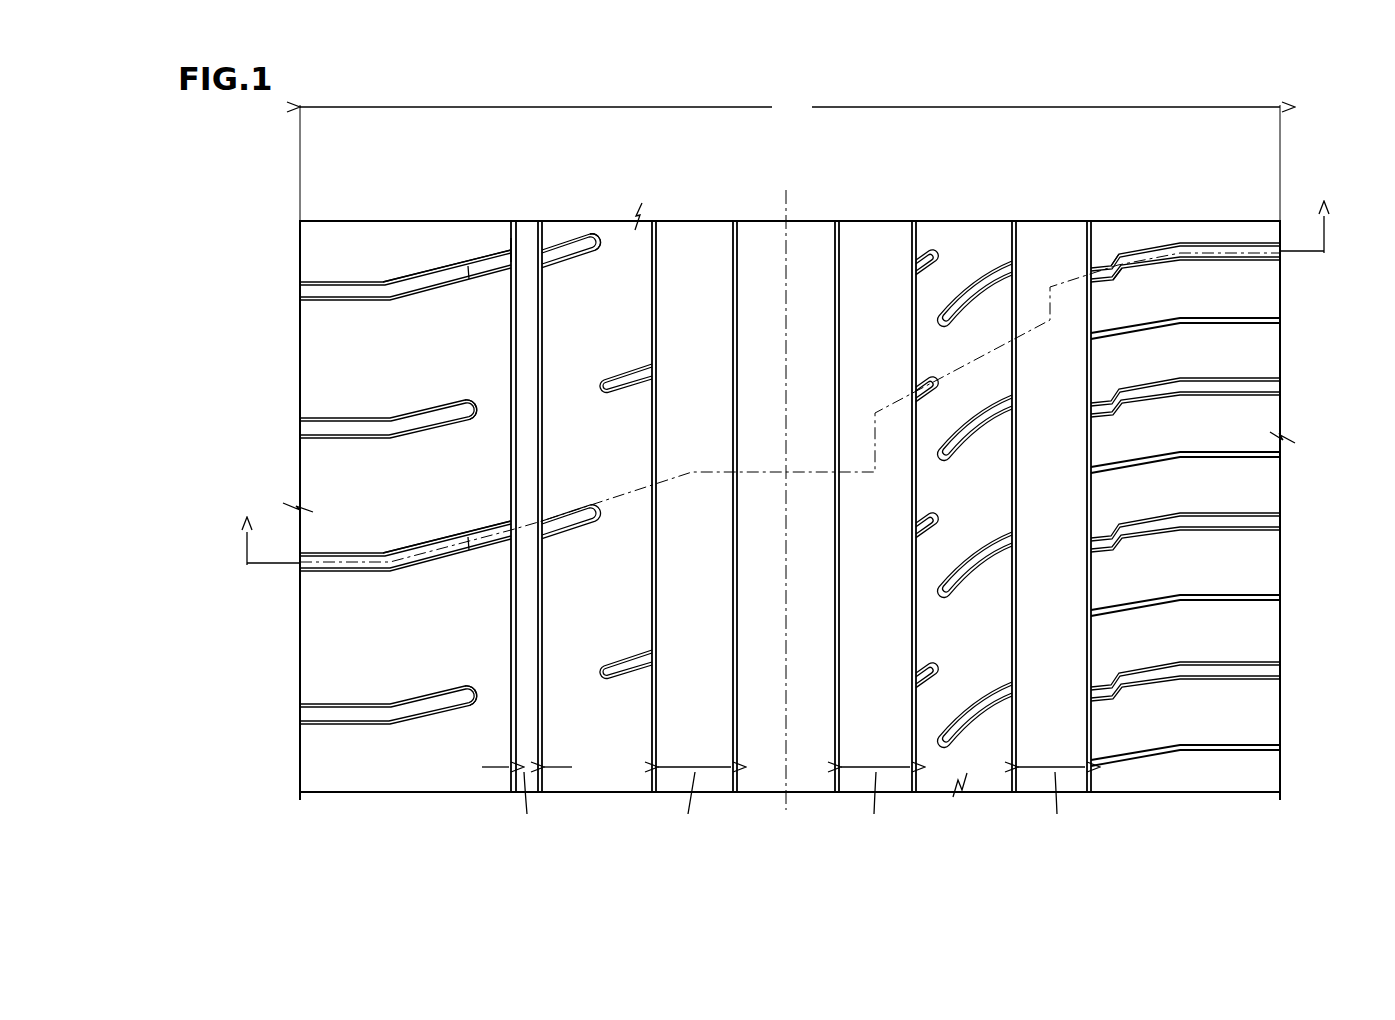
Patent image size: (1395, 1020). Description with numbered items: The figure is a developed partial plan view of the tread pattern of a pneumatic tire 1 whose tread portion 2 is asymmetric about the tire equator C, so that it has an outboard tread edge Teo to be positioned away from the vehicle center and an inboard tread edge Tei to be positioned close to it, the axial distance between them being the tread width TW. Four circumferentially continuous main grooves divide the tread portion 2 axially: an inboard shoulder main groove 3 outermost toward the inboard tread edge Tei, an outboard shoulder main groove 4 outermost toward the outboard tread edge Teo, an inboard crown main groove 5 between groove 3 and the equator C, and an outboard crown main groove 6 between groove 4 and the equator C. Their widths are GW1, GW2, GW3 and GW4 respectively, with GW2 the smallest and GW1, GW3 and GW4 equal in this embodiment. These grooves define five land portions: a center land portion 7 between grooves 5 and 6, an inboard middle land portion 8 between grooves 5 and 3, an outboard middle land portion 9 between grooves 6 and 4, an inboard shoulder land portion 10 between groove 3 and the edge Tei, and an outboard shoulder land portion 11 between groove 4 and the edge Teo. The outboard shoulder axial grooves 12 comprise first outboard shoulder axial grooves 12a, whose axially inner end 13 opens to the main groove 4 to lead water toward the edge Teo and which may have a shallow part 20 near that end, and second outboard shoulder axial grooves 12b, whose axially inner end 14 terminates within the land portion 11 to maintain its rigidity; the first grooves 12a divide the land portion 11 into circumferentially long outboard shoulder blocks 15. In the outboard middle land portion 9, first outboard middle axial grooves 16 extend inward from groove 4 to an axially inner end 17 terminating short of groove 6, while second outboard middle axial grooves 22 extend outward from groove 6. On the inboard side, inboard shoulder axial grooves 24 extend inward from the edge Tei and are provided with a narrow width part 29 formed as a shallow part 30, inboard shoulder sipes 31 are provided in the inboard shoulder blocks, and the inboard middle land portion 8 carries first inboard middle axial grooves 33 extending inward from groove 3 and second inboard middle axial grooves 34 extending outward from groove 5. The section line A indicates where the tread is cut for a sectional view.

The pneumatic tire 1 is at (1300, 183).
The tread portion 2 is at (980, 170).
The inboard shoulder main groove 3 is at (1055, 245).
The outboard shoulder main groove 4 is at (523, 245).
The inboard crown main groove 5 is at (868, 245).
The outboard crown main groove 6 is at (695, 243).
The center land portion 7 is at (803, 768).
The inboard middle land portion 8 is at (987, 760).
The outboard middle land portion 9 is at (600, 768).
The inboard shoulder land portion 10 is at (1178, 768).
The outboard shoulder land portion 11 is at (394, 768).
The outboard shoulder axial grooves 12 is at (333, 519).
The first outboard shoulder axial groove 12a is at (352, 293).
The second outboard shoulder axial groove 12b is at (357, 425).
The axially inner end 13 is at (515, 247).
The axially inner end 14 is at (478, 420).
The outboard shoulder block 15 is at (388, 512).
The first outboard middle axial groove 16 is at (565, 240).
The axially inner end 17 is at (600, 238).
The shallow part 20 is at (482, 272).
The second outboard middle axial groove 22 is at (628, 380).
The inboard shoulder axial groove 24 is at (1240, 383).
The narrow width part 29 is at (1185, 212).
The shallow part 30 is at (1100, 265).
The inboard shoulder sipe 31 is at (1228, 318).
The first inboard middle axial groove 33 is at (985, 275).
The second inboard middle axial groove 34 is at (937, 252).
The tread width TW is at (790, 156).
The tire equator C is at (786, 485).
The outboard tread edge Teo is at (298, 313).
The inboard tread edge Tei is at (1282, 332).
The width of inboard shoulder main groove GW1 is at (1054, 804).
The width of outboard shoulder main groove GW2 is at (527, 804).
The width of inboard crown main groove GW3 is at (875, 804).
The width of outboard crown main groove GW4 is at (694, 804).
The section line A- A is at (786, 384).